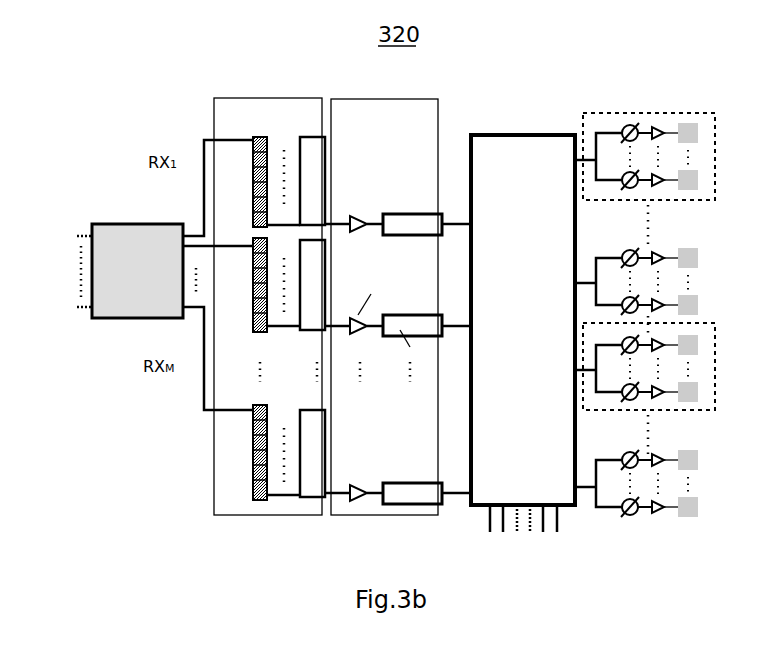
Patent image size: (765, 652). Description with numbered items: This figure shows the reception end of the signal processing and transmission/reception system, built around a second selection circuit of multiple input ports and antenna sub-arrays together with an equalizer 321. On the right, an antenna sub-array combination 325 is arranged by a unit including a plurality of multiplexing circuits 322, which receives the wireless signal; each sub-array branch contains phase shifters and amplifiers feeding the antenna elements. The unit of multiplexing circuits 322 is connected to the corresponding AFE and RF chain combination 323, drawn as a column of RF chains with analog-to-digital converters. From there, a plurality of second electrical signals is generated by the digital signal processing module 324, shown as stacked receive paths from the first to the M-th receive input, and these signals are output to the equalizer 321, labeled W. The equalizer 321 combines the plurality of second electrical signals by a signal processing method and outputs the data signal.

The equalizer 321 is at (113, 237).
The multiplexing circuits 322 is at (532, 165).
The AFE and RF chain combination 323 is at (402, 150).
The digital signal processing module 324 is at (272, 153).
The antenna sub-array combination 325 is at (652, 150).